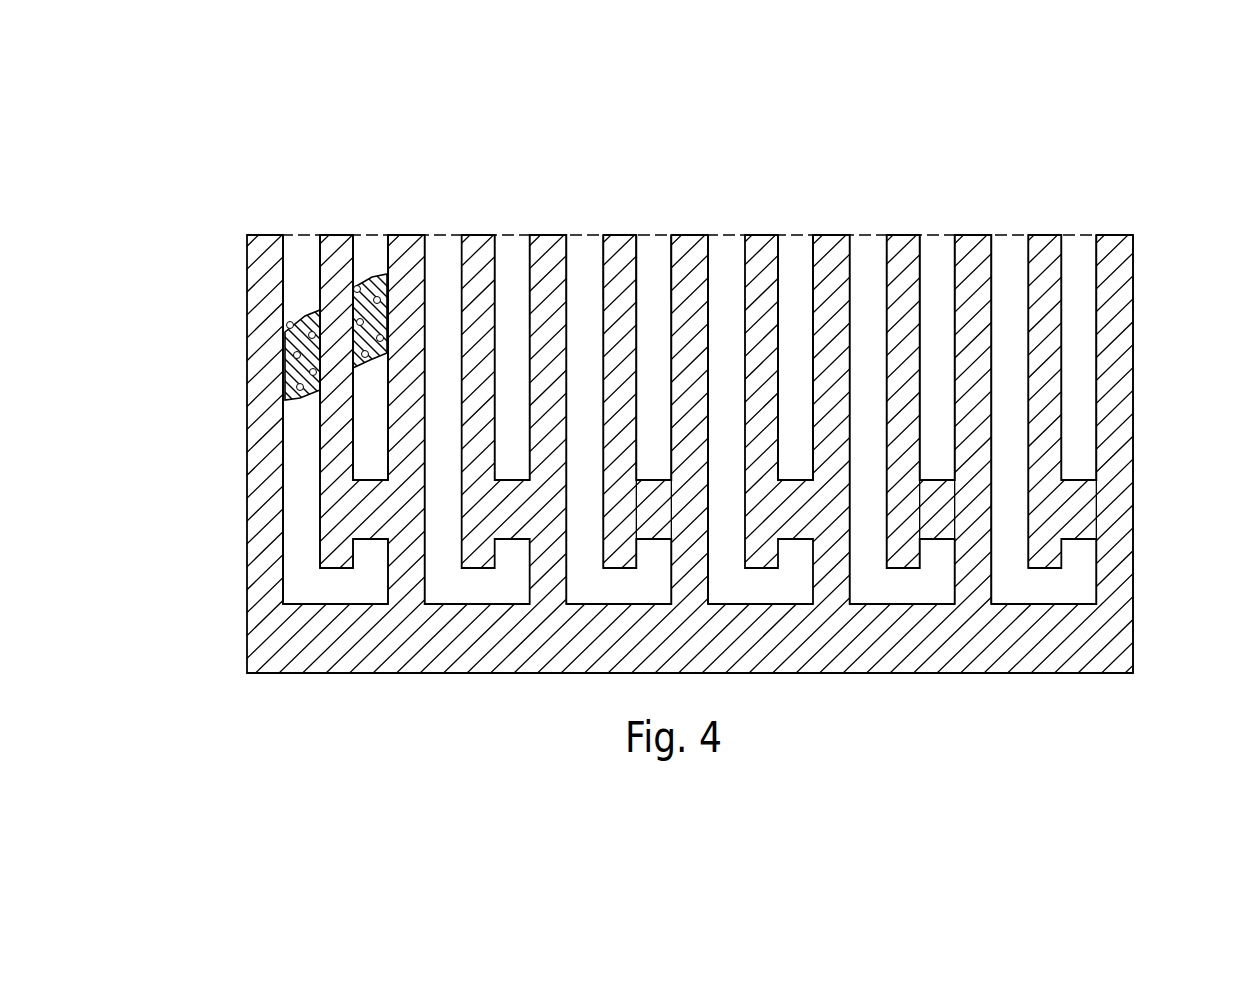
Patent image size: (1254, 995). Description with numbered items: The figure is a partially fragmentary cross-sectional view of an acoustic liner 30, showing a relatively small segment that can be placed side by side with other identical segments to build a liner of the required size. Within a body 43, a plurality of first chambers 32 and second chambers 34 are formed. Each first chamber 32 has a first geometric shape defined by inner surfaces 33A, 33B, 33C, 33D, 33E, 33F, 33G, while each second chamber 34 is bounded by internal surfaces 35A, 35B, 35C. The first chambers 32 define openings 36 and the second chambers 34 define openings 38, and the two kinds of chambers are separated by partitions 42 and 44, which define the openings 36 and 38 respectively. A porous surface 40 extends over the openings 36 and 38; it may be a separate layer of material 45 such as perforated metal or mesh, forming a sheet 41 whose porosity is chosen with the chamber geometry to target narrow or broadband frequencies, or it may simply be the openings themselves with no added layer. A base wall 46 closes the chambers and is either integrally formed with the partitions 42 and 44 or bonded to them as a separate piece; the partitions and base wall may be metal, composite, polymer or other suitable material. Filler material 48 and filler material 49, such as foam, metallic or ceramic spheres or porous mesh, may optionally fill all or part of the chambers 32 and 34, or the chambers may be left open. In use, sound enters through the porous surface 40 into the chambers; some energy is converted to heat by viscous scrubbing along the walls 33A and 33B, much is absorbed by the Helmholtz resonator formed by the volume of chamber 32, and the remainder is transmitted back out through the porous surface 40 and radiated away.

The acoustic liner 30 is at (229, 405).
The first chambers 32 is at (318, 243).
The second chambers 34 is at (385, 245).
The openings 36 is at (298, 220).
The openings 38 is at (384, 184).
The porous surface 40 is at (806, 240).
The sheet 41 is at (1020, 242).
The partitions 42 is at (621, 240).
The body 43 is at (1136, 408).
The partitions 44 is at (700, 242).
The layer of material 45 is at (785, 240).
The base wall 46 is at (890, 675).
The filler material 48 is at (313, 375).
The filler material 49 is at (367, 313).
The inner surface 33A is at (288, 235).
The inner surface 33B is at (318, 250).
The inner surface 33C is at (328, 568).
The inner surface 33D is at (346, 603).
The inner surface 33E is at (353, 545).
The inner surface 33F is at (371, 541).
The inner surface 33G is at (388, 583).
The internal surface 35A is at (355, 250).
The internal surface 35B is at (372, 247).
The internal surface 35C is at (370, 478).